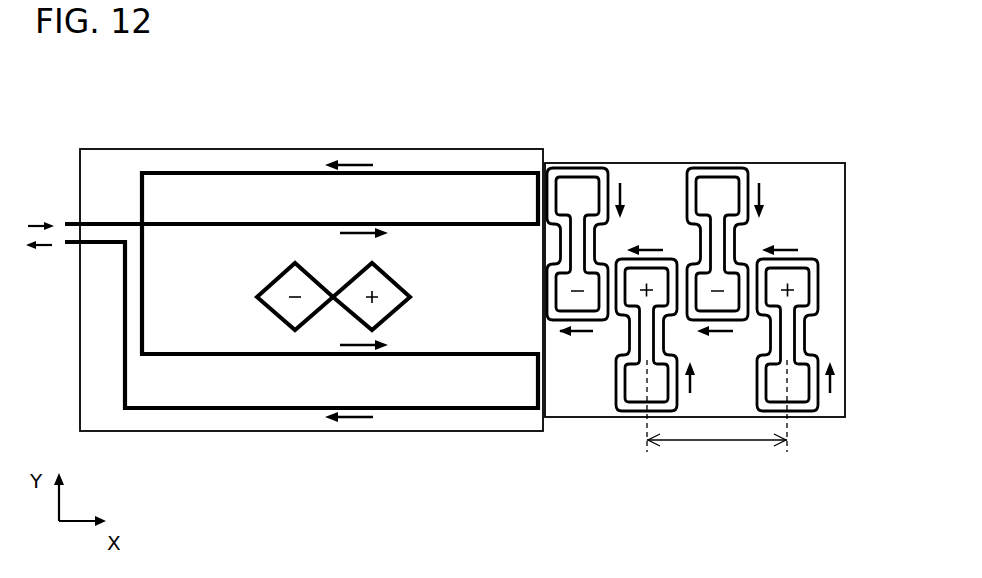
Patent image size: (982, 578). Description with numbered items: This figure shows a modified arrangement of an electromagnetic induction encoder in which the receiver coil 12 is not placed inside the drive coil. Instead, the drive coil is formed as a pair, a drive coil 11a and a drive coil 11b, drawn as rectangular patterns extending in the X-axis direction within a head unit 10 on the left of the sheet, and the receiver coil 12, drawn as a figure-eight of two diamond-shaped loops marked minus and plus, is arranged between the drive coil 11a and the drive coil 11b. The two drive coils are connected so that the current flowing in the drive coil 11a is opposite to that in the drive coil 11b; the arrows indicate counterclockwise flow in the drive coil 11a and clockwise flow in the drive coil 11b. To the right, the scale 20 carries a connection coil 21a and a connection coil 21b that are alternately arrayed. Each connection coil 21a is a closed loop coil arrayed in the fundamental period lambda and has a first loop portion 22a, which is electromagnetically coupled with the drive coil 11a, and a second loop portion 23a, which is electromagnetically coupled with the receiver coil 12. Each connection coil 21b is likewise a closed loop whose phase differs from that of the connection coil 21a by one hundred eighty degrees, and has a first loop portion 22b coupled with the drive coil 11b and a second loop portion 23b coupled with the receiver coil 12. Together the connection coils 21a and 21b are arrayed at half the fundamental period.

The detection head 10 is at (455, 432).
The drive coil 11a is at (410, 172).
The drive coil 11b is at (382, 408).
The receiver coil 12 is at (272, 282).
The scale 20 is at (827, 418).
The connection coil 21a is at (672, 194).
The connection coil 21b is at (677, 395).
The first loop portion 22a is at (609, 258).
The first loop portion 22b is at (622, 312).
The second loop portion 23a is at (605, 266).
The second loop portion 23b is at (618, 320).